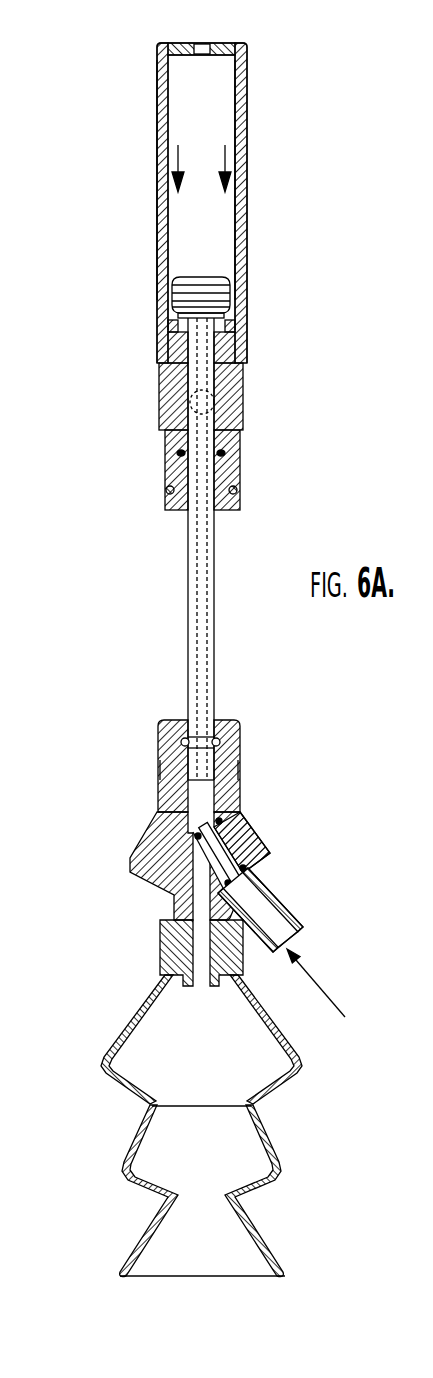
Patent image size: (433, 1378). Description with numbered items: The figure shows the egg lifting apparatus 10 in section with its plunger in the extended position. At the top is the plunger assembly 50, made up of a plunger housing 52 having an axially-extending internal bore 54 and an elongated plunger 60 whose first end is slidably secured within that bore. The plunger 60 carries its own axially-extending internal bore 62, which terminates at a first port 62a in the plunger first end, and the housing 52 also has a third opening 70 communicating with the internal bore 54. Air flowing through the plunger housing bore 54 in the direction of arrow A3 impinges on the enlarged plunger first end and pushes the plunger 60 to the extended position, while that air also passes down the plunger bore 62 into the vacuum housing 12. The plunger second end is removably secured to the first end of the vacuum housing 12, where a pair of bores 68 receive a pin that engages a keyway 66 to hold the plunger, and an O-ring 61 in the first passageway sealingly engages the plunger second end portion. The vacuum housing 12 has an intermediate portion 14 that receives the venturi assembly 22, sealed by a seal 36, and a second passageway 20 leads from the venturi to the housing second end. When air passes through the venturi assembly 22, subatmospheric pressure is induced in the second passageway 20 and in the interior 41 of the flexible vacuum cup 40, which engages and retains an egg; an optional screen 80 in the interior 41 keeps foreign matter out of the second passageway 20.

The egg lifting apparatus 10 is at (432, 222).
The vacuum housing 12 is at (157, 798).
The intermediate portion 14 is at (262, 846).
The second passageway 20 is at (173, 893).
The venturi assembly 22 is at (284, 893).
The seal 36 is at (238, 834).
The flexible vacuum cup 40 is at (121, 1043).
The interior 41 is at (181, 1246).
The plunger assembly 50 is at (265, 59).
The plunger housing 52 is at (157, 173).
The internal bore 54 is at (236, 230).
The elongated plunger 60 is at (215, 682).
The O-ring 61 is at (158, 764).
The internal bore 62 is at (208, 562).
The first port 62a is at (202, 276).
The keyway 66 is at (216, 730).
The bores 68 is at (158, 738).
The third opening 70 is at (243, 399).
The screen 80 is at (143, 1130).
The arrow A3 is at (236, 155).